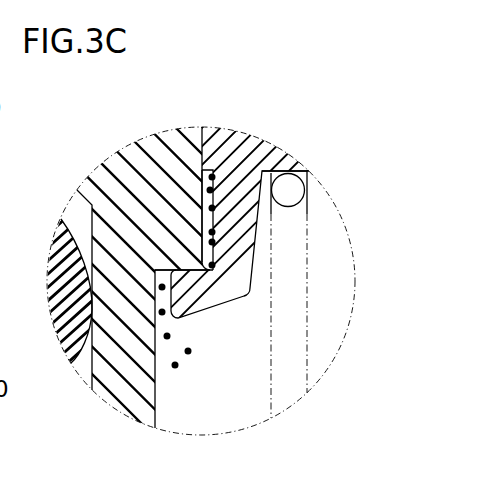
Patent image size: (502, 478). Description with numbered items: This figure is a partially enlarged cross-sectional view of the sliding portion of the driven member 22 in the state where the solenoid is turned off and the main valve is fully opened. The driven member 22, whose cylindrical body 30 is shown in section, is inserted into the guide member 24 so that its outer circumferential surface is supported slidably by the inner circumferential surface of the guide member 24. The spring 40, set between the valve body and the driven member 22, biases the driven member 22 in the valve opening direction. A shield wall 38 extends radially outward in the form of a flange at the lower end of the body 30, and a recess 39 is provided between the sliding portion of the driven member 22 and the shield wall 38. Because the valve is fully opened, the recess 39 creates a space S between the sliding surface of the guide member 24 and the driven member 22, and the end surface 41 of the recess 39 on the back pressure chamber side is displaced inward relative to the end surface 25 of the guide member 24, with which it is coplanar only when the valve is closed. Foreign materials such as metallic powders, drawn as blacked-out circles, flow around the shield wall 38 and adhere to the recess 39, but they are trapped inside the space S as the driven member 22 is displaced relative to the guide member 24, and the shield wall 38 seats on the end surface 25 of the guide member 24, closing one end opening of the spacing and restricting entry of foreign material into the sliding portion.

The driven member 22 is at (196, 233).
The body 30 is at (279, 229).
The guide member 24 is at (132, 152).
The end surface 41 is at (203, 190).
The space S is at (205, 199).
The recess 39 is at (203, 227).
The end surface 25 is at (178, 272).
The shield wall 38 is at (193, 278).
The spring 40 is at (307, 357).